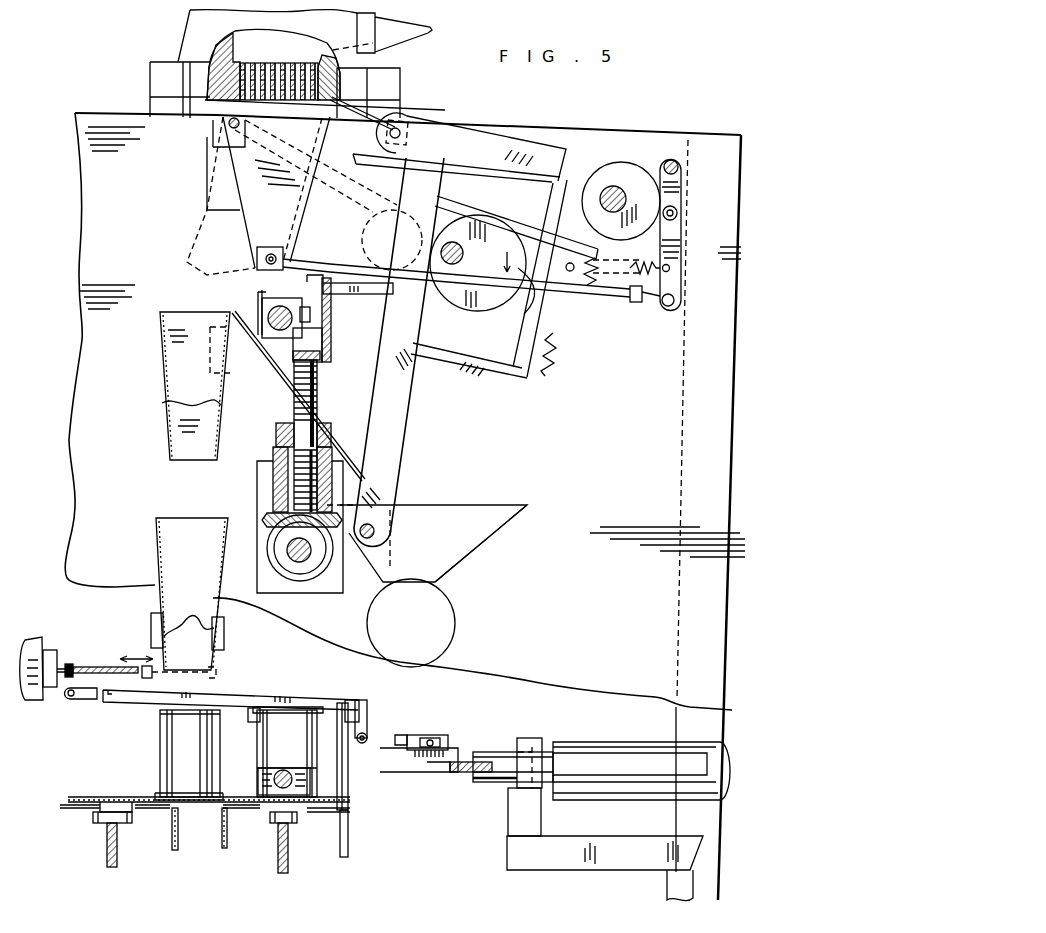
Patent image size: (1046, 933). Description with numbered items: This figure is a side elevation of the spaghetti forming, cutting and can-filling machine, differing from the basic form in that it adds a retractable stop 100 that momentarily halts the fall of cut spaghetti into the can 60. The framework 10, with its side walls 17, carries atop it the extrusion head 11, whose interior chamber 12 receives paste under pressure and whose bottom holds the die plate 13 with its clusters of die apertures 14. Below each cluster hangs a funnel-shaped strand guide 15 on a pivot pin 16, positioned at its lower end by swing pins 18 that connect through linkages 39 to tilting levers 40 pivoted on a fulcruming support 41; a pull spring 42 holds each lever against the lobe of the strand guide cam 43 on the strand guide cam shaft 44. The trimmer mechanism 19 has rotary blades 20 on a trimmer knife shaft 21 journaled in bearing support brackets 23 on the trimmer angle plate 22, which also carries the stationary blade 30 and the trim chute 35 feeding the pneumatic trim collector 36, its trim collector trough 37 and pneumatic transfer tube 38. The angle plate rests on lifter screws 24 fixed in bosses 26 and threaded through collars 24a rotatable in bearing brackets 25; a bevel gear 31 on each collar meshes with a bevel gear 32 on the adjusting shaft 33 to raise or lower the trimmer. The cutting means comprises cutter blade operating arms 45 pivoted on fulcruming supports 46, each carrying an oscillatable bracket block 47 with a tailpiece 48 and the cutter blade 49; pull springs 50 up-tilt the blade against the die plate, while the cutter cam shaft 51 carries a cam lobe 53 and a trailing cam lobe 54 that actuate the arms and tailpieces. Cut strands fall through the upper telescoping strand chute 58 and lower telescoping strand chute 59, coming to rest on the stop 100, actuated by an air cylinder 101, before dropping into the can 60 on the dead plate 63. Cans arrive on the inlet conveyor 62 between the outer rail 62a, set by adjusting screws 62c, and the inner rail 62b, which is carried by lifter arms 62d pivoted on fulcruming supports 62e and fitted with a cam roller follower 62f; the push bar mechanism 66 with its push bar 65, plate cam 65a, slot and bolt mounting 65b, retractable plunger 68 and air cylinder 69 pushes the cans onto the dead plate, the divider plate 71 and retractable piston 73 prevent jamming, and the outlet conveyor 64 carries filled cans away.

The framework 10 is at (686, 140).
The extrusion head 11 is at (190, 38).
The interior chamber 12 is at (290, 48).
The die plate 13 is at (322, 68).
The die apertures 14 is at (258, 72).
The strand guide 15 is at (268, 206).
The pivot pin 16 is at (228, 124).
The side walls 17 is at (574, 463).
The swing pins 18 is at (284, 255).
The trimmer mechanism 19 is at (245, 301).
The rotary blades 20 is at (262, 300).
The trimmer knife shaft 21 is at (283, 305).
The trimmer angle plate 22 is at (331, 328).
The bearing support brackets 23 is at (326, 308).
The lifter screws 24 is at (318, 384).
The threaded collar 24a is at (271, 436).
The bearing bracket 25 is at (273, 466).
The bosses 26 is at (338, 355).
The stationary blade 30 is at (312, 262).
The bevel gear 31 is at (268, 518).
The bevel gear 32 is at (282, 550).
The adjusting shaft 33 is at (300, 565).
The trim chute 35 is at (333, 440).
The pneumatic trim collector 36 is at (494, 492).
The trim collector trough 37 is at (470, 545).
The pneumatic transfer tube 38 is at (452, 612).
The linkages 39 is at (600, 290).
The tilting levers 40 is at (680, 258).
The fulcruming support 41 is at (678, 168).
The pull spring 42 is at (648, 262).
The strand guide cam 43 is at (628, 172).
The strand guide cam shaft 44 is at (612, 195).
The cutter blade operating arms 45 is at (400, 440).
The fulcruming supports 46 is at (368, 538).
The oscillatable bracket block 47 is at (372, 130).
The tailpiece 48 is at (510, 205).
The cutter blade 49 is at (362, 113).
The pull springs 50 is at (553, 343).
The cutter cam shaft 51 is at (462, 257).
The cam lobe 53 is at (466, 310).
The trailing cam lobe 54 is at (530, 313).
The upper telescoping strand chute 58 is at (162, 364).
The lower telescoping strand chute 59 is at (155, 570).
The can 60 is at (200, 757).
The inlet conveyor 62 is at (300, 812).
The outer rail 62a is at (348, 700).
The inner rail 62b is at (252, 713).
The adjusting screws 62c is at (362, 700).
The lifter arms 62d is at (117, 698).
The fulcruming supports 62e is at (72, 701).
The cam roller follower 62f is at (367, 735).
The dead plate 63 is at (183, 800).
The outlet conveyor 64 is at (80, 797).
The push bar 65 is at (462, 772).
The plate cam 65a is at (440, 735).
The slot and bolt mounting 65b is at (426, 738).
The push bar mechanism 66 is at (490, 752).
The retractable plunger 68 is at (523, 732).
The air cylinder 69 is at (608, 745).
The divider plate 71 is at (399, 772).
The retractable piston 73 is at (260, 776).
The retractable stop 100 is at (86, 666).
The air cylinder 101 is at (30, 637).